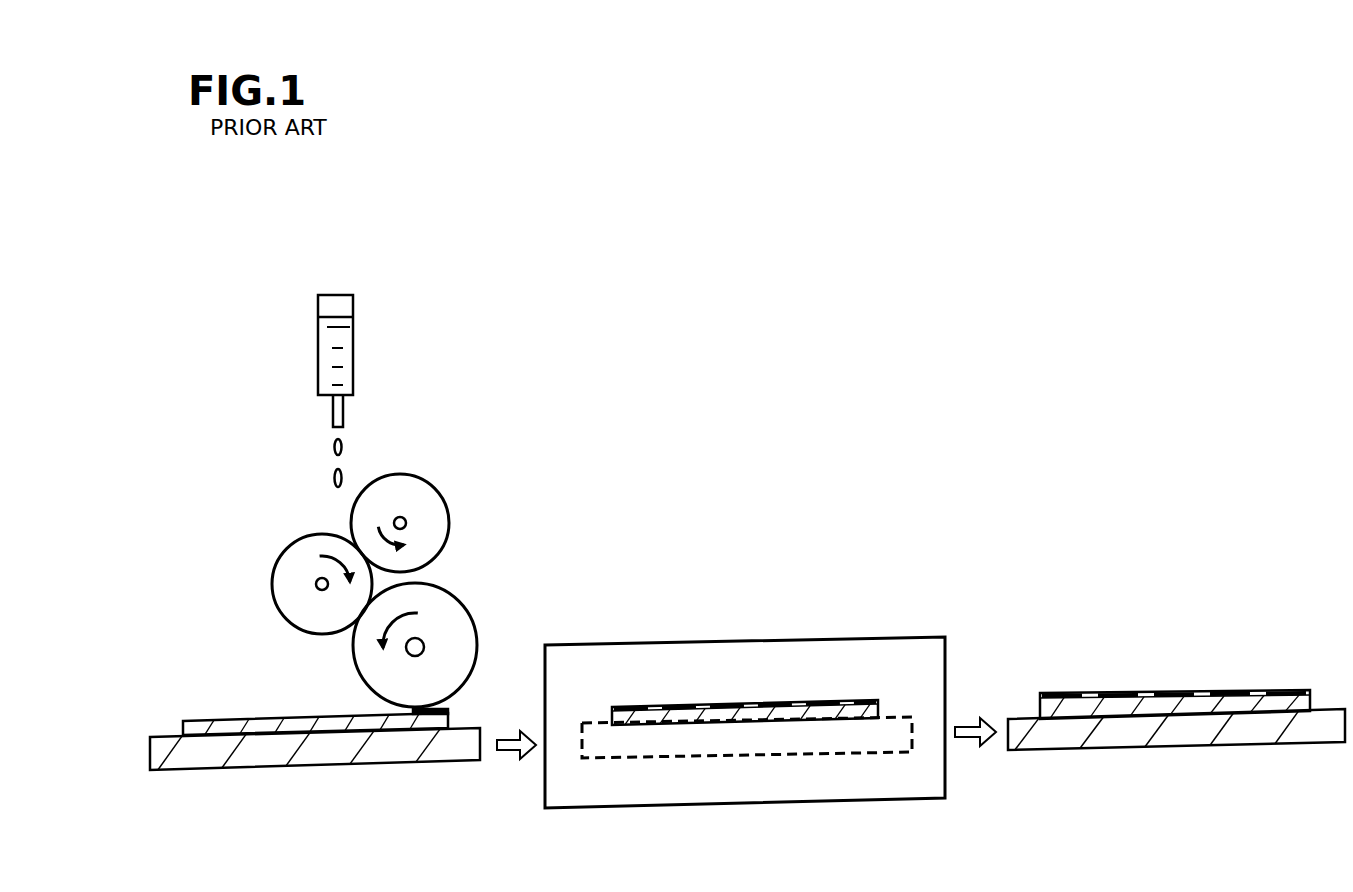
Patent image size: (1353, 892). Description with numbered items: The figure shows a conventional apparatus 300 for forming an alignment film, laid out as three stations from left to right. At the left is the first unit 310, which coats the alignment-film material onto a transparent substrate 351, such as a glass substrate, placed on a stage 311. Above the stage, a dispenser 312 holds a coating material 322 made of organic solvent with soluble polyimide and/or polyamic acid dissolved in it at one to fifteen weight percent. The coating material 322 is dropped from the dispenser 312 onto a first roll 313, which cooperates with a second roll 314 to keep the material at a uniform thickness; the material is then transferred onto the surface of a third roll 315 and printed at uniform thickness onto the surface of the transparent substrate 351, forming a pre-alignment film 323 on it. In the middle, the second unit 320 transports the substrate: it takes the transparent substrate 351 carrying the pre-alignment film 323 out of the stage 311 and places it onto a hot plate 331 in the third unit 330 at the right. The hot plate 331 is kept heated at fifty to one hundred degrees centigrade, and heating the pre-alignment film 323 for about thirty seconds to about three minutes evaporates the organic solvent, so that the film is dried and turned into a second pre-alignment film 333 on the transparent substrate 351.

The conventional apparatus 300 is at (762, 158).
The first unit 310 is at (362, 260).
The stage 311 is at (256, 762).
The dispenser 312 is at (310, 349).
The first roll 313 is at (293, 540).
The second roll 314 is at (478, 475).
The third roll 315 is at (456, 590).
The second unit 320 is at (763, 251).
The coating material 322 is at (344, 444).
The pre-alignment film 323 is at (440, 720).
The third unit 330 is at (1190, 243).
The hot plate 331 is at (1065, 741).
The second pre-alignment film 333 is at (1255, 700).
The transparent substrate 351 is at (228, 725).